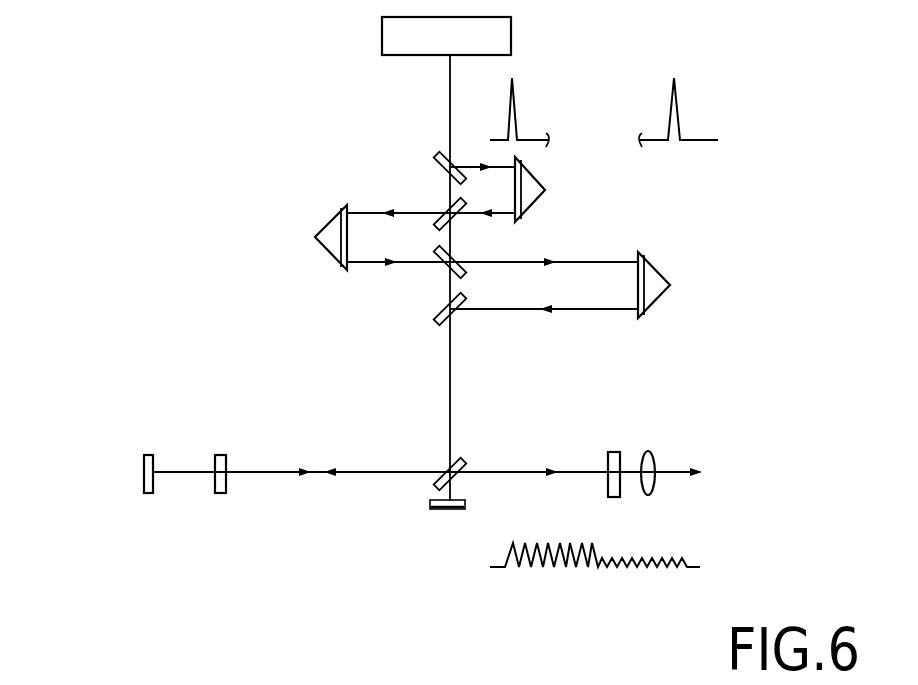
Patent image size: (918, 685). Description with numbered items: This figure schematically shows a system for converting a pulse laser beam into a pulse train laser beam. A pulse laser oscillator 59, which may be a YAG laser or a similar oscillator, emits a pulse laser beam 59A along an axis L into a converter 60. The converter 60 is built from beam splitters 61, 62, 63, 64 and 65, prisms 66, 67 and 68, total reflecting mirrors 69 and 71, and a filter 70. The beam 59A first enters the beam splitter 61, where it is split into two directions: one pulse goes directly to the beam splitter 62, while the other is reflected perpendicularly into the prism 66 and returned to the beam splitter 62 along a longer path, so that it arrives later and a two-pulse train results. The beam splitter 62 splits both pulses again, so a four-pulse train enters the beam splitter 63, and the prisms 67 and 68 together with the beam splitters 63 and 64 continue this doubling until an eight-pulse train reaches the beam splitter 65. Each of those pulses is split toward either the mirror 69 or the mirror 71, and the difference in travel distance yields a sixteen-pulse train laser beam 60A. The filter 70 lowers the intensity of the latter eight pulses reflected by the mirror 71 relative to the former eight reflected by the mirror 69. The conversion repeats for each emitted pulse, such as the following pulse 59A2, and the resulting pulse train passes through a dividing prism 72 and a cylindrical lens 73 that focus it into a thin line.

The pulse laser oscillator 59 is at (382, 40).
The laser beam L is at (450, 128).
The pulse laser beam 59A is at (513, 105).
The pulse laser beam 59A2 is at (677, 100).
The converter 60 is at (258, 275).
The pulse train laser beam 60A is at (523, 542).
The beam splitter 61 is at (440, 158).
The beam splitter 62 is at (447, 212).
The beam splitter 63 is at (462, 262).
The beam splitter 64 is at (440, 318).
The beam splitter 65 is at (458, 467).
The prism 66 is at (545, 182).
The prism 67 is at (327, 222).
The prism 68 is at (657, 278).
The total reflecting mirror 69 is at (432, 508).
The filter 70 is at (222, 452).
The total reflecting mirror 71 is at (147, 452).
The prism 72 is at (615, 450).
The lens 73 is at (652, 452).